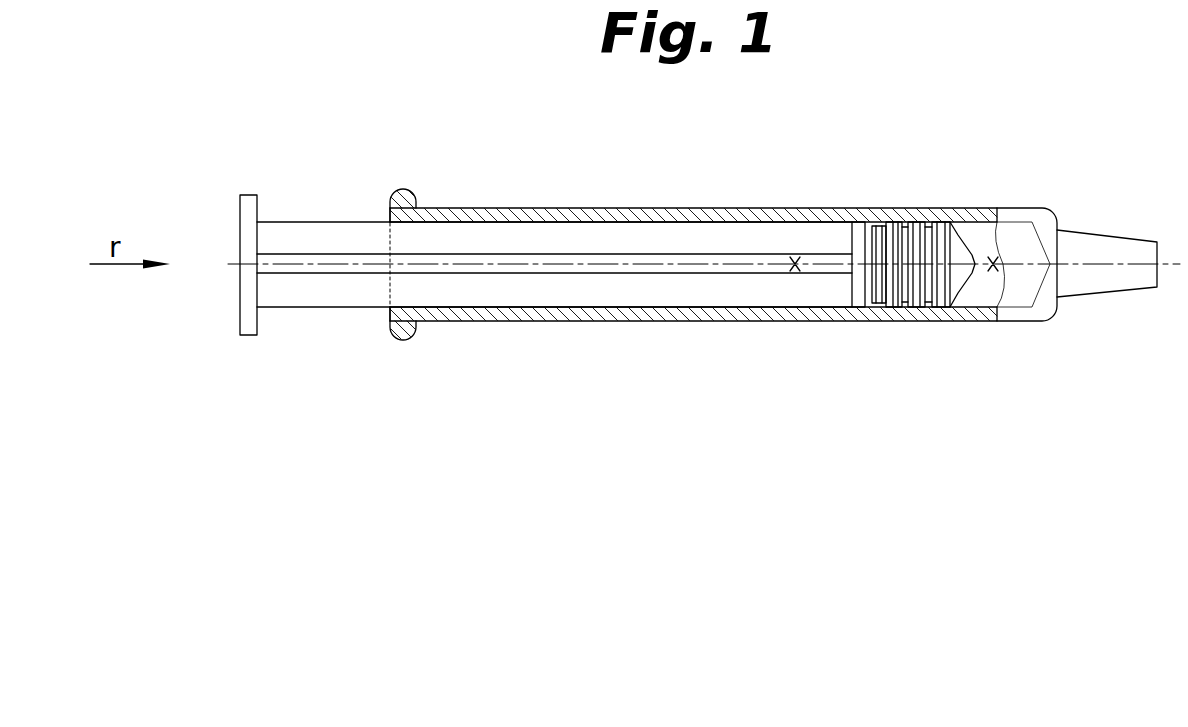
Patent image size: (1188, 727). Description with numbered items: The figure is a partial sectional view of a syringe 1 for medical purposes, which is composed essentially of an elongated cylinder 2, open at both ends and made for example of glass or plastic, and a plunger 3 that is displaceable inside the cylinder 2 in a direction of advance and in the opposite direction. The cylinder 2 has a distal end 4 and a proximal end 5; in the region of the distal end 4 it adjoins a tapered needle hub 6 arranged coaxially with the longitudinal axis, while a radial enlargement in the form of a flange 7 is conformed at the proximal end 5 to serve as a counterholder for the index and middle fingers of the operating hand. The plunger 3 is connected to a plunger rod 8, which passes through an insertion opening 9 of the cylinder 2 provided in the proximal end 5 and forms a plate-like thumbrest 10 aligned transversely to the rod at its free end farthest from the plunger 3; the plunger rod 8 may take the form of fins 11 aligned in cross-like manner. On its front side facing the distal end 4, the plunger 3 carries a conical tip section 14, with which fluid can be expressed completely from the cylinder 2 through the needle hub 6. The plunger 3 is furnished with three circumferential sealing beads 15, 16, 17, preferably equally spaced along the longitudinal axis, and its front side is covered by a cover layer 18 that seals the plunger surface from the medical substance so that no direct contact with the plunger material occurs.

The syringe 1 is at (1012, 155).
The cylinder 2 is at (763, 207).
The plunger 3 is at (908, 315).
The distal end 4 is at (1037, 217).
The proximal end 5 is at (388, 312).
The needle hub 6 is at (1105, 280).
The flange 7 is at (410, 330).
The plunger rod 8 is at (332, 236).
The insertion opening 9 is at (400, 310).
The thumbrest 10 is at (247, 227).
The fins 11 is at (323, 257).
The tip section 14 is at (970, 283).
The sealing bead 15 is at (955, 300).
The sealing bead 16 is at (917, 217).
The sealing bead 17 is at (880, 220).
The cover layer 18 is at (975, 263).